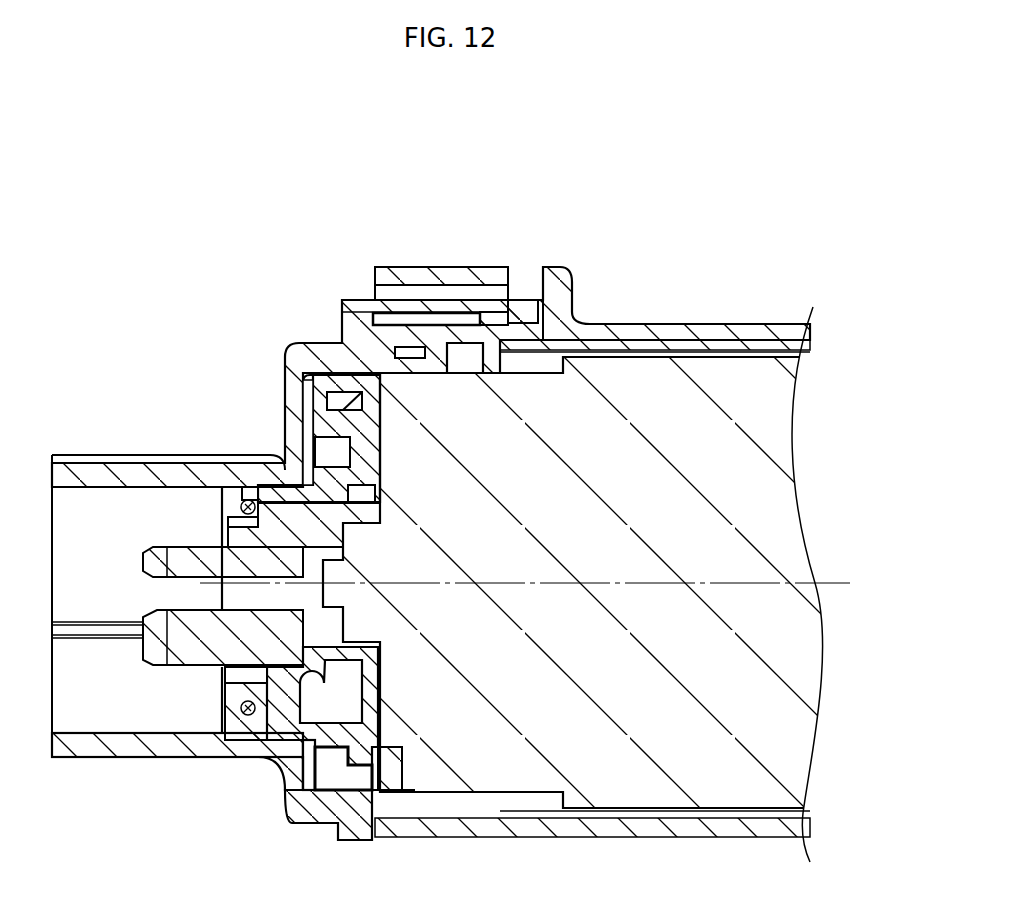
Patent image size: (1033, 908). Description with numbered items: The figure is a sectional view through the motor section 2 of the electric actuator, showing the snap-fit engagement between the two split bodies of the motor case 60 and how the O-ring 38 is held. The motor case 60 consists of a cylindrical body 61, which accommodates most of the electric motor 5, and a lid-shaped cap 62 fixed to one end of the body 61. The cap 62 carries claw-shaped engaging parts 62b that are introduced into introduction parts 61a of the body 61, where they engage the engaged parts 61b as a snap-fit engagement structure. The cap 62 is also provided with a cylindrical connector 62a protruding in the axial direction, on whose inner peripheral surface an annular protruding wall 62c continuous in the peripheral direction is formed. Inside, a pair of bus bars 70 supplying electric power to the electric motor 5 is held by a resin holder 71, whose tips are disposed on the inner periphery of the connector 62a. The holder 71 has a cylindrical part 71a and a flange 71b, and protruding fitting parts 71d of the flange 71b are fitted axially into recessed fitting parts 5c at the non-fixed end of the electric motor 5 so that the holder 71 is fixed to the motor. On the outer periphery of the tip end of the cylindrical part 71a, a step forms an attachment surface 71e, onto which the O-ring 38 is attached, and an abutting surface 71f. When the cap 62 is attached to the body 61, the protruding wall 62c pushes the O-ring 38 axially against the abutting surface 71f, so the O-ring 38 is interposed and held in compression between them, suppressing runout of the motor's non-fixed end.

The motor section 2 is at (677, 294).
The electric motor 5 is at (742, 388).
The recessed fitting parts 5c is at (403, 770).
The O-ring 38 is at (241, 502).
The motor case 60 is at (487, 163).
The body 61 is at (576, 499).
The introduction parts 61a is at (407, 290).
The engaged parts 61b is at (497, 313).
The cap 62 is at (302, 355).
The connector 62a is at (90, 477).
The engaging parts 62b is at (522, 310).
The annular protruding wall 62c is at (222, 505).
The bus bars 70 is at (173, 622).
The holder 71 is at (285, 632).
The cylindrical part 71a is at (282, 760).
The flange 71b is at (342, 742).
The protruding fitting parts 71d is at (387, 777).
The attachment surface 71e is at (228, 521).
The abutting surface 71f is at (245, 488).